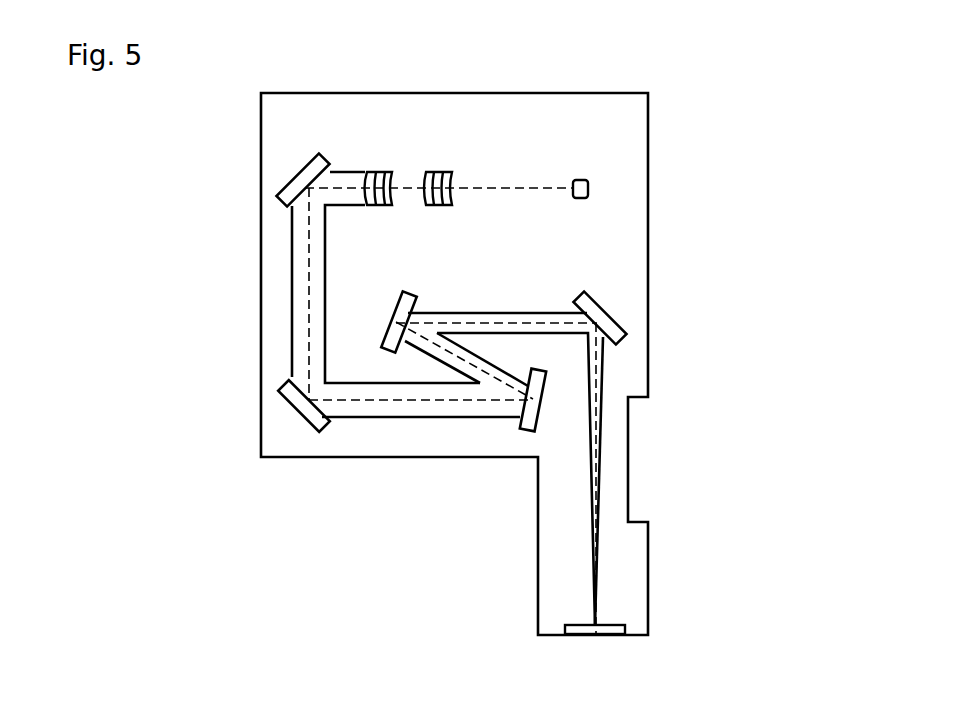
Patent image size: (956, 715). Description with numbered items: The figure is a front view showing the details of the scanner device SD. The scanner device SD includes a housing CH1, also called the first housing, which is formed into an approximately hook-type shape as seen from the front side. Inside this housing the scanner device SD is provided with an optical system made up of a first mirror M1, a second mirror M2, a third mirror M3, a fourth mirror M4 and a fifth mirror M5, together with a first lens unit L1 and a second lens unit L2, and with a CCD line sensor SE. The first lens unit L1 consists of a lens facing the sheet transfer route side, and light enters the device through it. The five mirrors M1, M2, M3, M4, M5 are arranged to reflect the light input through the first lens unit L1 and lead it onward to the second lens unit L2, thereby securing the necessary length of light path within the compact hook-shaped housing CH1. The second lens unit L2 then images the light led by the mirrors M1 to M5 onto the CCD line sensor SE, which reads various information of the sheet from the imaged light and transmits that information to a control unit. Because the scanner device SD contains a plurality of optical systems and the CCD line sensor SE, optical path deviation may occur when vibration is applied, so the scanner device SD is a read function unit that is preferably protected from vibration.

The scanner device SD is at (529, 322).
The housing (first housing) CH1 is at (648, 187).
The CCD line sensor SE is at (586, 181).
The first lens unit L1 is at (572, 635).
The second lens unit L2 is at (427, 157).
The first mirror M1 is at (623, 328).
The second mirror M2 is at (390, 320).
The third mirror M3 is at (520, 432).
The fourth mirror M4 is at (302, 413).
The fifth mirror M5 is at (293, 181).